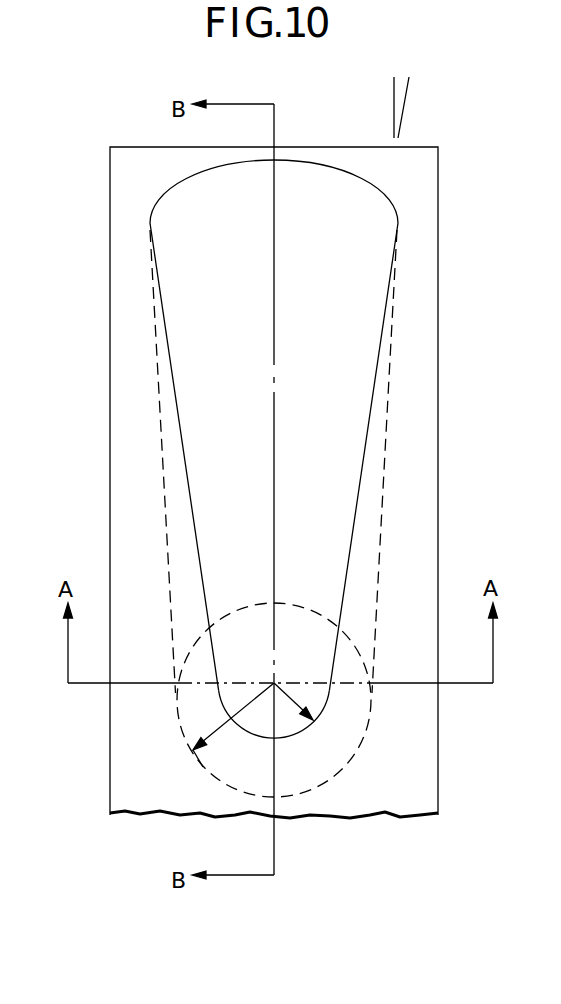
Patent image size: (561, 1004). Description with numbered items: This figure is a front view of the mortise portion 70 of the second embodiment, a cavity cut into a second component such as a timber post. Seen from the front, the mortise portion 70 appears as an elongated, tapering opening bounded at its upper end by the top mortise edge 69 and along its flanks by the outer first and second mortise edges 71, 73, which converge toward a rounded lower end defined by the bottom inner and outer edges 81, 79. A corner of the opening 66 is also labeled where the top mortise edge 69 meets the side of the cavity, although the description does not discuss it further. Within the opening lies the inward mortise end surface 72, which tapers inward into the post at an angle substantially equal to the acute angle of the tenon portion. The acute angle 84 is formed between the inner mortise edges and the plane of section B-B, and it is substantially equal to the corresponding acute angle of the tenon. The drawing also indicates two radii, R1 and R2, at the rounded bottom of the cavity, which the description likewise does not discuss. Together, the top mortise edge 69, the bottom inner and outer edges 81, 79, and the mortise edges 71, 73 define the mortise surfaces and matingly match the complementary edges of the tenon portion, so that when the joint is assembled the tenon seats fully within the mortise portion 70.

The cavity opening corner 66 is at (265, 461).
The top mortise edge 69 is at (297, 160).
The mortise portion 70 is at (456, 245).
The outer first mortise edge 71 is at (357, 475).
The inward mortise end surface 72 is at (348, 410).
The outer second mortise edge 73 is at (183, 450).
The bottom outer edge 79 is at (258, 738).
The bottom inner edge 81 is at (340, 769).
The acute angle 84 is at (443, 110).
The bottom radius R1 is at (320, 707).
The reference circle radius R2 is at (215, 730).